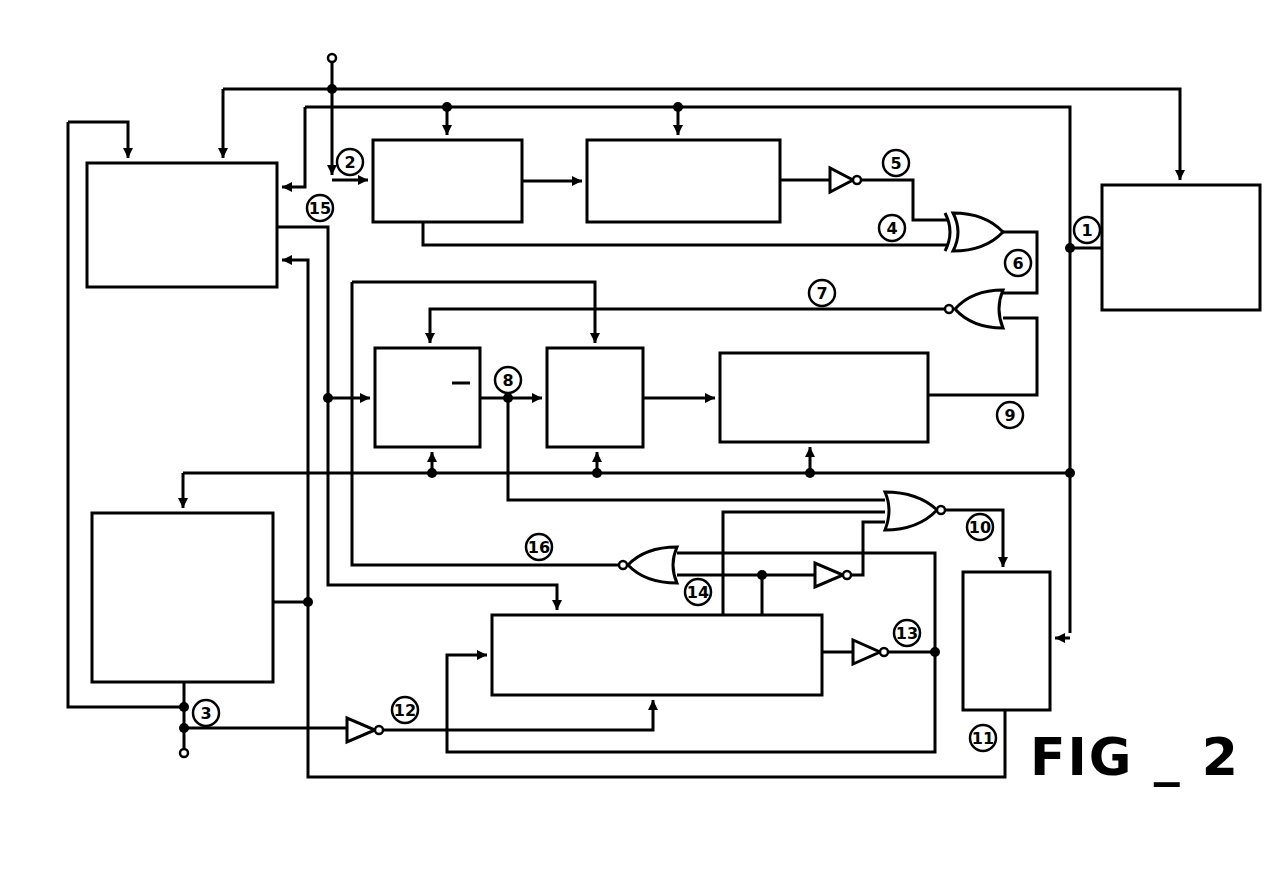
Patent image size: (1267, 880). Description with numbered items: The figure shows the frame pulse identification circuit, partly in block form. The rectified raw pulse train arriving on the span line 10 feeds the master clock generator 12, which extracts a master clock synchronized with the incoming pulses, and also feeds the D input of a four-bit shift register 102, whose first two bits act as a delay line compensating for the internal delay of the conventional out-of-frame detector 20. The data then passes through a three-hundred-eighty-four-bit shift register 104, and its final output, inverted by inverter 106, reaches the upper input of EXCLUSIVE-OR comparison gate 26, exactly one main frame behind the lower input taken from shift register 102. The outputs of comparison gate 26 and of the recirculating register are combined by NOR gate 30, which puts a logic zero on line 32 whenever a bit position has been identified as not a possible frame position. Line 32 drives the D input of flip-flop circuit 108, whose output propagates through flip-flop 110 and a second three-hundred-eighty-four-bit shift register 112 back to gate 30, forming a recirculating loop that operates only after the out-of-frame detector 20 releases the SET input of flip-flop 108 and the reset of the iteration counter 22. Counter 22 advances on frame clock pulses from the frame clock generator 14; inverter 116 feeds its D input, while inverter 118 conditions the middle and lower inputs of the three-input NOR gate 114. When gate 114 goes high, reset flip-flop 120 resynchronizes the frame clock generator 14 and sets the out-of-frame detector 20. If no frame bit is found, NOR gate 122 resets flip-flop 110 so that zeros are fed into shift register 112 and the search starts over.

The span line 10 is at (337, 61).
The master clock generator 12 is at (1196, 310).
The frame clock generator 14 is at (125, 512).
The out-of-frame detector 20 is at (178, 287).
The iteration counter 22 is at (730, 696).
The EXCLUSIVE-OR comparison gate 26 is at (983, 211).
The NOR gate 30 is at (968, 295).
The line 32 is at (687, 310).
The four-bit shift register 102 is at (523, 149).
The 384-bit shift register 104 is at (782, 141).
The inverter 106 is at (844, 187).
The flip-flop circuit 108 is at (398, 348).
The flip-flop 110 is at (643, 347).
The 384-bit shift register 112 is at (833, 352).
The three-input NOR gate 114 is at (922, 500).
The inverter 116 is at (867, 663).
The inverter 118 is at (835, 587).
The reset flip-flop 120 is at (1050, 683).
The NOR gate 122 is at (650, 548).